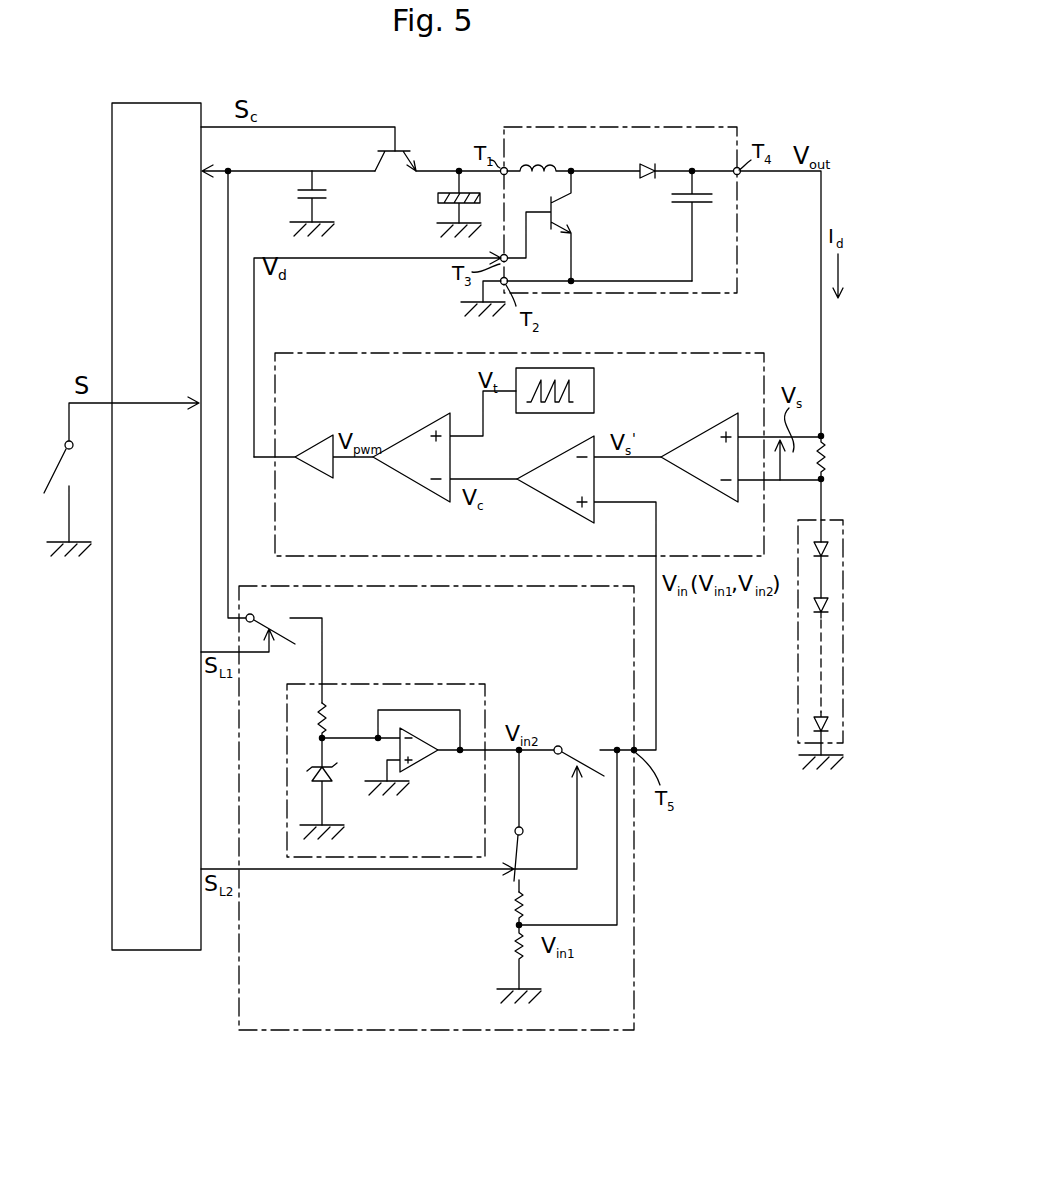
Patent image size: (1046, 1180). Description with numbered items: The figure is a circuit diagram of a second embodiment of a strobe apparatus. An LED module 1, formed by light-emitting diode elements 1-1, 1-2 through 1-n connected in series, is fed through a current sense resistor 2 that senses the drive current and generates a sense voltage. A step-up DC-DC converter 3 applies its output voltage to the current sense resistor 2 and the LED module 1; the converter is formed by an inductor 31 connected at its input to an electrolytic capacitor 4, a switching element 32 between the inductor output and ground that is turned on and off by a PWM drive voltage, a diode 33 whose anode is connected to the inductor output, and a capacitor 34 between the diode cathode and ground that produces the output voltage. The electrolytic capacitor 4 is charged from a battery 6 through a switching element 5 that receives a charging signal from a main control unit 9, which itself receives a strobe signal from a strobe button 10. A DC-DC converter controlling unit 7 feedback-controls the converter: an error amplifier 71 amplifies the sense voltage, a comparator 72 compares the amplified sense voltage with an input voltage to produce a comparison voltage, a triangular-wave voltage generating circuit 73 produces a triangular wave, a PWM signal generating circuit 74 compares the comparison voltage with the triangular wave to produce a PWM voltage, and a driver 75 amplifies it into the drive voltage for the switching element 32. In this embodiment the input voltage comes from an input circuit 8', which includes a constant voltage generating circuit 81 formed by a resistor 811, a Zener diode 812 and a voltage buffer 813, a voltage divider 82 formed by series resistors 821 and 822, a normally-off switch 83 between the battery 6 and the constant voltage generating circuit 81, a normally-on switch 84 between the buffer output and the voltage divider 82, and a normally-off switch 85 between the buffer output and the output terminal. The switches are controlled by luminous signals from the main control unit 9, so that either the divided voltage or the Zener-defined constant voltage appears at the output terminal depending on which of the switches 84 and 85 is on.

The LED module 1 is at (845, 624).
The light-emitting diode element 1-1 is at (825, 545).
The light-emitting diode element 1-2 is at (825, 603).
The light-emitting diode element 1-n is at (825, 721).
The current sense resistor 2 is at (828, 462).
The step-up DC-DC converter 3 is at (645, 127).
The electrolytic capacitor 4 is at (438, 197).
The switching element 5 is at (396, 150).
The battery 6 is at (298, 191).
The DC-DC converter controlling unit 7 is at (625, 352).
The input circuit 8' is at (473, 808).
The main control unit 9 is at (151, 103).
The strobe button 10 is at (64, 446).
The inductor 31 is at (540, 165).
The switching element 32 is at (568, 206).
The diode 33 is at (650, 174).
The capacitor 34 is at (676, 202).
The error amplifier 71 is at (685, 446).
The comparator 72 is at (563, 450).
The triangular-wave voltage generating circuit 73 is at (594, 393).
The PWM signal generating circuit 74 is at (411, 433).
The driver 75 is at (306, 447).
The constant voltage generating circuit 81 is at (447, 684).
The voltage divider 82 is at (464, 947).
The normally-off switch 83 is at (293, 633).
The normally-on switch 84 is at (522, 836).
The normally-off switch 85 is at (588, 746).
The resistor 811 is at (326, 712).
The Zener diode 812 is at (327, 775).
The voltage buffer 813 is at (426, 765).
The resistor 821 is at (514, 902).
The resistor 822 is at (480, 957).